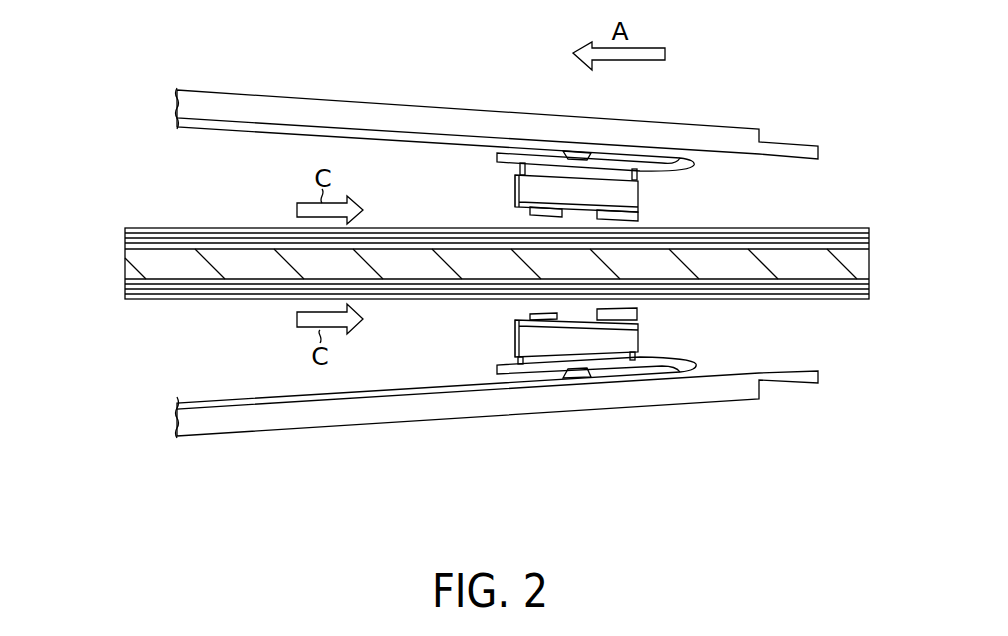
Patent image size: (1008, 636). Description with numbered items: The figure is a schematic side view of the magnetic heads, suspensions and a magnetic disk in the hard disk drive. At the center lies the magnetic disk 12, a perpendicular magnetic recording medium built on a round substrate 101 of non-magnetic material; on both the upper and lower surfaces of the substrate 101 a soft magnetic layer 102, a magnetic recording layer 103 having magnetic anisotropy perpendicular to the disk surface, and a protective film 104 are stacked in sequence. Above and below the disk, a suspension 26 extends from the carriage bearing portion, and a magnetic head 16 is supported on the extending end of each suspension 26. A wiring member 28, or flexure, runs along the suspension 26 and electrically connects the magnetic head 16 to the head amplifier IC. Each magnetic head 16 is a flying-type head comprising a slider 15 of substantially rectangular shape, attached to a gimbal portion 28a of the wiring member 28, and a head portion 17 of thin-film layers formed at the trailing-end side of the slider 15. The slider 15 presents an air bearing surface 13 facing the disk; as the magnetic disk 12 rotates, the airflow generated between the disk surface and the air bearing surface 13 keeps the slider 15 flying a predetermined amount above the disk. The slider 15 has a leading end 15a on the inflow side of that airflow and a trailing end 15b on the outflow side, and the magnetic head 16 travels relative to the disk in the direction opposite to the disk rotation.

The magnetic disk 12 is at (168, 222).
The air bearing surface 13 is at (570, 214).
The slider 15 is at (582, 266).
The leading end 15a is at (497, 154).
The trailing end 15b is at (640, 184).
The magnetic head 16 is at (502, 190).
The head portion 17 is at (641, 218).
The suspension 26 is at (317, 110).
The wiring member 28 is at (257, 133).
The gimbal portion 28a is at (550, 156).
The substrate 101 is at (245, 268).
The soft magnetic layer 102 is at (126, 238).
The magnetic recording layer 103 is at (206, 240).
The protective film 104 is at (133, 229).